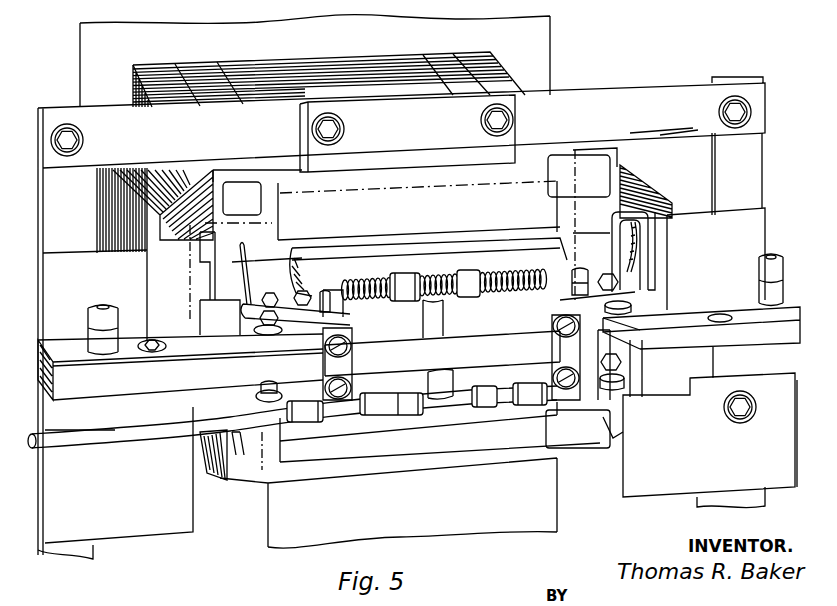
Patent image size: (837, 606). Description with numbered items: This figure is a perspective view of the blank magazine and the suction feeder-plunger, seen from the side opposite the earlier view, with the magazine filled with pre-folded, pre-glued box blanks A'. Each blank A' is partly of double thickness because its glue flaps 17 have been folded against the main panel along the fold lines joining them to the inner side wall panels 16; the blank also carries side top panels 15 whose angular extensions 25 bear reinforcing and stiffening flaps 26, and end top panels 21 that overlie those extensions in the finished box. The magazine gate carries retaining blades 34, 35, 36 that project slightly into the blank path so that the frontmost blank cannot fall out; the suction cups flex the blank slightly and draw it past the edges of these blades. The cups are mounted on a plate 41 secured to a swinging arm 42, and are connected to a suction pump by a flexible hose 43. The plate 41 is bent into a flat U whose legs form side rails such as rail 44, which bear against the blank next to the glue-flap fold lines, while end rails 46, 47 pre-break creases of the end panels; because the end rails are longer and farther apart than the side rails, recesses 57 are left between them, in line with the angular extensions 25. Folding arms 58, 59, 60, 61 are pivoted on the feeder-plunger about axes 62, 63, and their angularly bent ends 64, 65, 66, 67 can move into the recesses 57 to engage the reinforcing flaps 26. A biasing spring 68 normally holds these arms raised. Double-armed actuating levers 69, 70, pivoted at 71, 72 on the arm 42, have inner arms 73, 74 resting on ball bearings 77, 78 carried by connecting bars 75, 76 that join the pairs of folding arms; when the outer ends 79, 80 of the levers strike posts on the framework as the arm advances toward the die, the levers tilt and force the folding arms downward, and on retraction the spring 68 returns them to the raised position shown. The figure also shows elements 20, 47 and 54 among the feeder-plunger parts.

The blank A' is at (333, 73).
The side top panels 15 is at (417, 184).
The inner side wall panels 16 is at (420, 219).
The glue flaps 17 is at (362, 238).
The lamination section 20 is at (603, 215).
The end top panels 21 is at (190, 262).
The angular extensions 25 is at (416, 310).
The reinforcing and stiffening flaps 26 is at (248, 206).
The retaining blade 34 is at (722, 261).
The retaining blade 35 is at (414, 141).
The retaining blade 36 is at (105, 281).
The plate 41 is at (469, 325).
The arm 42 is at (458, 362).
The flexible hose 43 is at (172, 433).
The side rail 44 is at (446, 243).
The end rail 46 is at (633, 242).
The end rail 47 is at (228, 304).
The bracket arm 54 is at (200, 268).
The recesses 57 is at (255, 262).
The folding arm 58 is at (292, 323).
The folding arm 59 is at (641, 278).
The folding arm 60 is at (238, 448).
The folding arm 61 is at (582, 374).
The axis 62 is at (312, 290).
The axis 63 is at (585, 280).
The angularly bent end 64 is at (243, 270).
The angularly bent end 65 is at (637, 238).
The angularly bent end 66 is at (230, 466).
The angularly bent end 67 is at (630, 436).
The biasing spring 68 is at (507, 283).
The actuating lever 69 is at (184, 348).
The actuating lever 70 is at (700, 314).
The pivot 71 is at (92, 310).
The pivot 72 is at (759, 278).
The inner arm 73 is at (247, 352).
The inner arm 74 is at (617, 330).
The connecting bar 75 is at (270, 386).
The connecting bar 76 is at (624, 364).
The ball bearing 77 is at (254, 329).
The ball bearing 78 is at (626, 307).
The outer end 79 is at (62, 345).
The outer end 80 is at (792, 297).